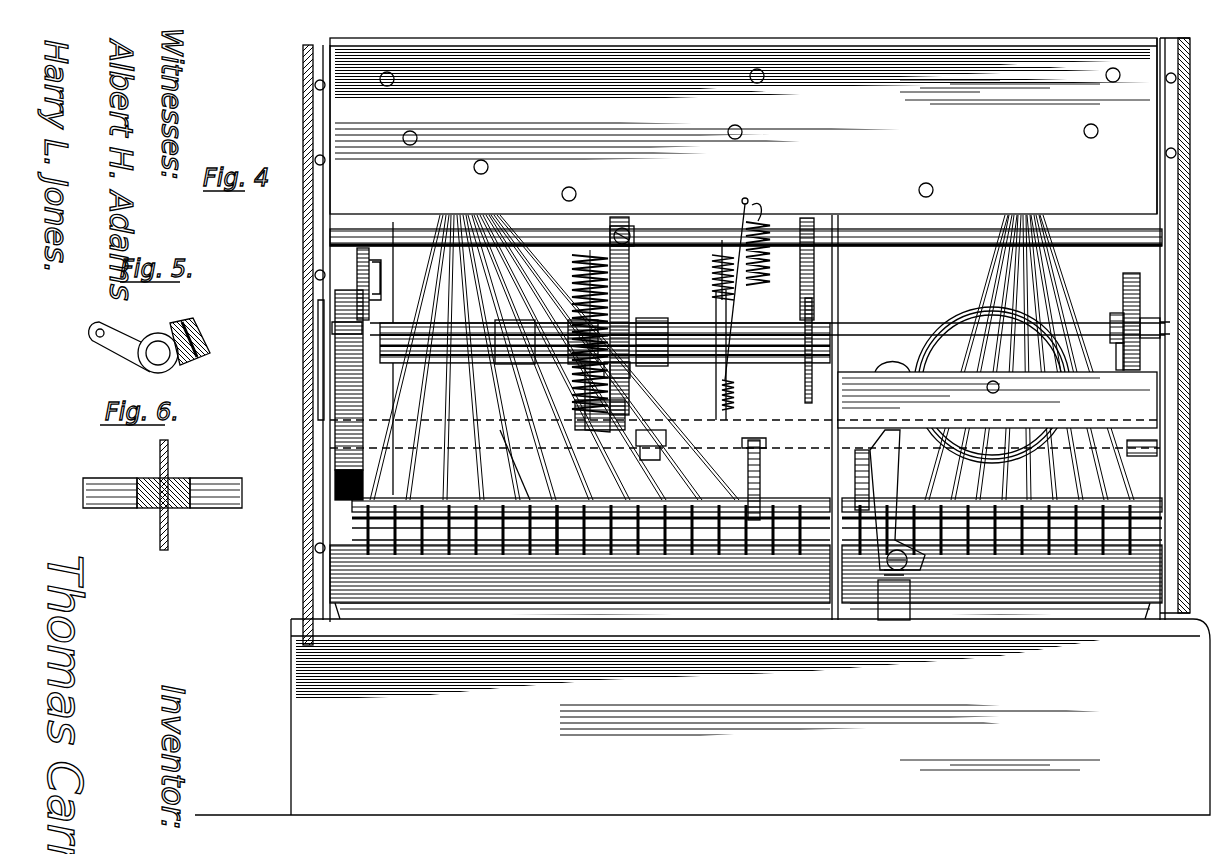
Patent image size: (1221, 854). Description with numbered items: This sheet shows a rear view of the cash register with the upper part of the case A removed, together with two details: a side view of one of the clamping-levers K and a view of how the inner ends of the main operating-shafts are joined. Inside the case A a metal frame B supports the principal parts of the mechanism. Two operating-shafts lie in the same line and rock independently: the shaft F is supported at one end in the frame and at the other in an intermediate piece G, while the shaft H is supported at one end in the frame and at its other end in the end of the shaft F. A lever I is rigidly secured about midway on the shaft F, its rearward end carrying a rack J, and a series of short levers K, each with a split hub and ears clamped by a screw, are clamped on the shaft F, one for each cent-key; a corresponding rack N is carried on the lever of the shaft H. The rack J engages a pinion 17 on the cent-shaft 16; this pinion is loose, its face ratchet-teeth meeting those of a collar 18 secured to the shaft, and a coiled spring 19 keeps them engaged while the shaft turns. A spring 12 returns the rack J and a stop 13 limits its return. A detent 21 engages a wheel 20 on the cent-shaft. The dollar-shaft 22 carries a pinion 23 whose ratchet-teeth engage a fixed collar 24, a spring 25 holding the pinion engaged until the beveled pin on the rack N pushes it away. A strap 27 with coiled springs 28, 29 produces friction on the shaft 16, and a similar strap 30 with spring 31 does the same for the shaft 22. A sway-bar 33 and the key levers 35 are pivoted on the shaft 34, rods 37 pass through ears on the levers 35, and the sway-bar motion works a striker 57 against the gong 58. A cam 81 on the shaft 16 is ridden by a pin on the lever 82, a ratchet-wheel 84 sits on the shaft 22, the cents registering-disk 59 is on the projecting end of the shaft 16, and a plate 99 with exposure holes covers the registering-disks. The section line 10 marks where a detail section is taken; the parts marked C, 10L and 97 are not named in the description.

In FIG. 4, the case A is at (702, 717).
In FIG. 4, the metal frame B is at (1195, 265).
In FIG. 4, the partition plate C is at (840, 285).
In FIG. 4, the shaft F is at (515, 465).
In FIG. 6, the shaft F is at (135, 472).
In FIG. 6, the intermediate piece G is at (170, 450).
In FIG. 4, the shaft H is at (1080, 452).
In FIG. 6, the shaft H is at (240, 472).
In FIG. 4, the lever I is at (615, 397).
In FIG. 4, the rack J is at (632, 296).
In FIG. 4, the short clamping-lever K is at (658, 444).
In FIG. 5, the short clamping-lever K is at (156, 334).
In FIG. 4, the rack N is at (1132, 273).
In FIG. 4, the section line 10 is at (393, 222).
In FIG. 4, the top rail 10L is at (514, 232).
In FIG. 4, the spring 12 is at (572, 292).
In FIG. 4, the stop 13 is at (624, 228).
In FIG. 4, the cent-shaft 16 is at (508, 364).
In FIG. 4, the pinion 17 is at (648, 320).
In FIG. 4, the collar 18 is at (582, 364).
In FIG. 4, the coiled spring 19 is at (628, 370).
In FIG. 4, the wheel 20 is at (806, 368).
In FIG. 4, the detent 21 is at (797, 269).
In FIG. 4, the dollar-shaft 22 is at (560, 326).
In FIG. 4, the pinion 23 is at (1114, 314).
In FIG. 4, the fixed collar 24 is at (1160, 328).
In FIG. 4, the spring 25 is at (1118, 352).
In FIG. 4, the strap 27 is at (716, 370).
In FIG. 4, the coiled spring 28 is at (712, 273).
In FIG. 4, the coiled spring 29 is at (734, 395).
In FIG. 4, the strap 30 is at (750, 315).
In FIG. 4, the spring 31 is at (768, 244).
In FIG. 4, the sway-bar 33 is at (465, 508).
In FIG. 4, the shaft 34 is at (584, 555).
In FIG. 4, the lever 35 is at (746, 555).
In FIG. 4, the rod 37 is at (420, 440).
In FIG. 4, the striker 57 is at (892, 355).
In FIG. 4, the gong 58 is at (992, 385).
In FIG. 4, the registering-disk 59 is at (322, 370).
In FIG. 4, the cam 81 is at (362, 395).
In FIG. 4, the lever 82 is at (385, 272).
In FIG. 4, the ratchet-wheel 84 is at (340, 328).
In FIG. 4, the bolt 97 is at (762, 466).
In FIG. 4, the plate 99 is at (330, 420).